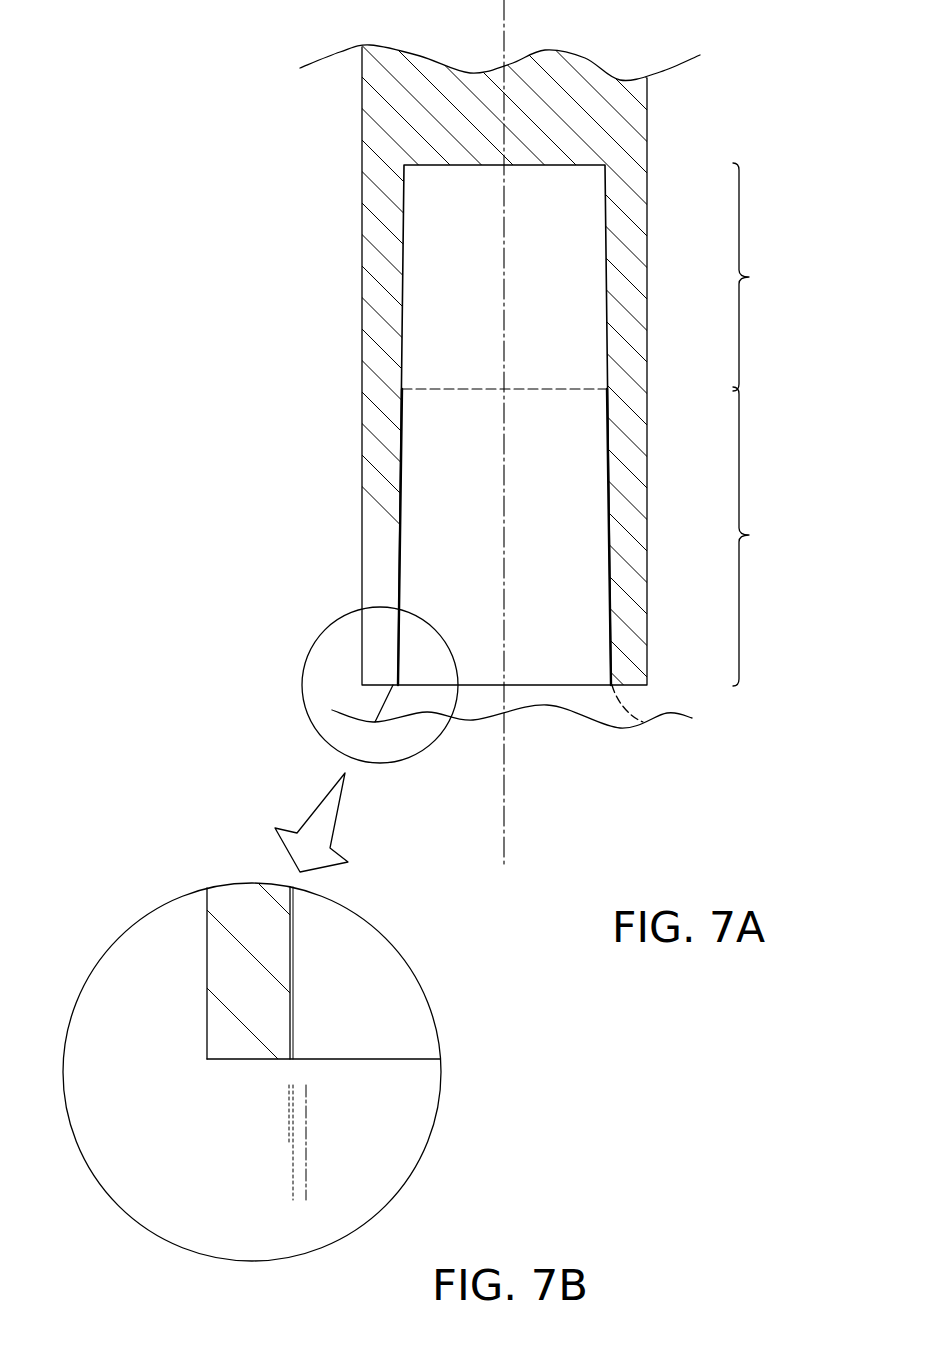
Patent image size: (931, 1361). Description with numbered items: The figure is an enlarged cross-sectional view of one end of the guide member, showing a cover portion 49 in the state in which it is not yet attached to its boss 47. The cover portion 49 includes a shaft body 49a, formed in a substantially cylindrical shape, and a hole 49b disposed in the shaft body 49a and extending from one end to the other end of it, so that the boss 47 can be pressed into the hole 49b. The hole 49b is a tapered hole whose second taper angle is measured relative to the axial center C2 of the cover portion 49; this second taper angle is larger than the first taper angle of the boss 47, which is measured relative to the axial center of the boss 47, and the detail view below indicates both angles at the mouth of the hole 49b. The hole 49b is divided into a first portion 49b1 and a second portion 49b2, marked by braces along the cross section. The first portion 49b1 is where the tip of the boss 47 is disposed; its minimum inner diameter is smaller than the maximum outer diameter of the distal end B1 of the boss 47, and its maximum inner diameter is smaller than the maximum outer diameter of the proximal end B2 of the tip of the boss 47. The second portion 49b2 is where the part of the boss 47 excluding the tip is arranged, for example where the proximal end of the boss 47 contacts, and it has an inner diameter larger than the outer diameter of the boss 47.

In FIG. 7A, the cover portion 49 is at (325, 208).
In FIG. 7B, the cover portion 49 is at (232, 969).
In FIG. 7A, the shaft body 49a is at (603, 113).
In FIG. 7A, the hole 49b is at (398, 557).
In FIG. 7A, the first portion 49b1 is at (783, 277).
In FIG. 7A, the second portion 49b2 is at (783, 536).
In FIG. 7A, the boss 47 is at (585, 695).
In FIG. 7B, the boss 47 is at (280, 1002).
In FIG. 7A, the distal end B1 is at (445, 170).
In FIG. 7A, the proximal end B2 is at (445, 390).
In FIG. 7B, the axial center C2 is at (310, 1226).